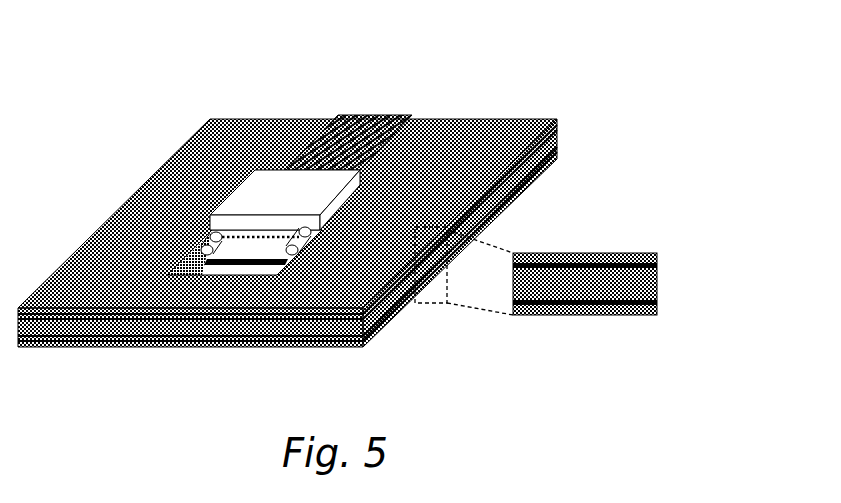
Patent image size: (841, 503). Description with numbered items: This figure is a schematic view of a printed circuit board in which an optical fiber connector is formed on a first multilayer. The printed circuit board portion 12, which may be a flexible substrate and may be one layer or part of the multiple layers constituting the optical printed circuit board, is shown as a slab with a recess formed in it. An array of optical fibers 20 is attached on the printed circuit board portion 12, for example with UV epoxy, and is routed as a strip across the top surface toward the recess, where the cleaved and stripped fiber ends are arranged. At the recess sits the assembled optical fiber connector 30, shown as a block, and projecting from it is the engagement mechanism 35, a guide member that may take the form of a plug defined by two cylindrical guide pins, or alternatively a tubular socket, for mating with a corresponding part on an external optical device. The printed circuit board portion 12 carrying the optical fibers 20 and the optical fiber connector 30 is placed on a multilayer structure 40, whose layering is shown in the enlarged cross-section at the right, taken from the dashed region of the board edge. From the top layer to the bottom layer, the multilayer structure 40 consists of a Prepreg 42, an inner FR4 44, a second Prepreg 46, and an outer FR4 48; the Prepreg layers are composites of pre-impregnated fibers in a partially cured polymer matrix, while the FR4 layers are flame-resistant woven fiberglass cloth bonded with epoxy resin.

The printed circuit board portion 12 is at (559, 120).
The array of optical fibers 20 is at (366, 113).
The optical fiber connector 30 is at (265, 183).
The engagement mechanism 35 is at (203, 243).
The multilayer structure 40 is at (664, 284).
The Prepreg 42 is at (658, 267).
The inner FR4 44 is at (658, 288).
The Prepreg 46 is at (658, 305).
The outer FR4 48 is at (658, 318).